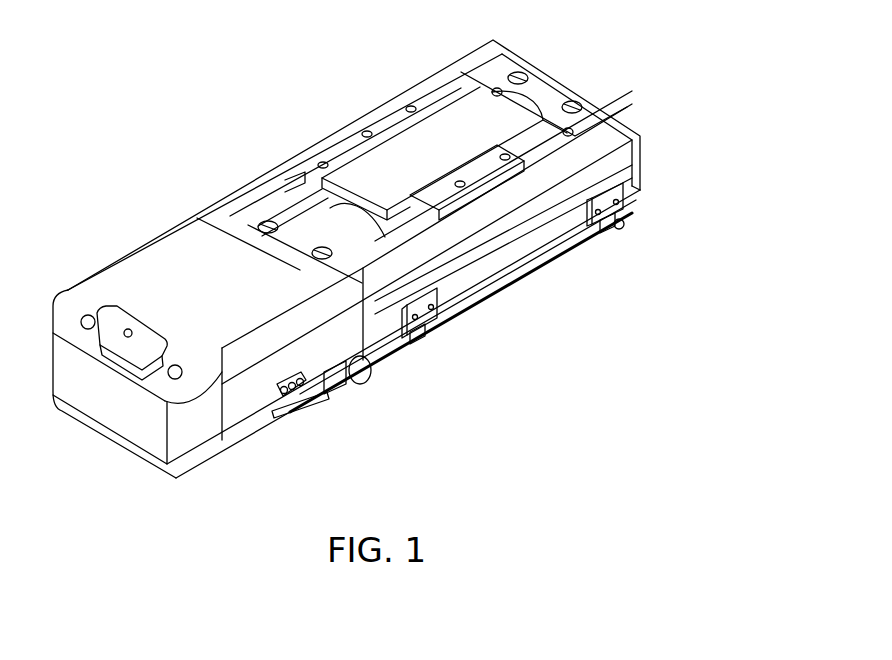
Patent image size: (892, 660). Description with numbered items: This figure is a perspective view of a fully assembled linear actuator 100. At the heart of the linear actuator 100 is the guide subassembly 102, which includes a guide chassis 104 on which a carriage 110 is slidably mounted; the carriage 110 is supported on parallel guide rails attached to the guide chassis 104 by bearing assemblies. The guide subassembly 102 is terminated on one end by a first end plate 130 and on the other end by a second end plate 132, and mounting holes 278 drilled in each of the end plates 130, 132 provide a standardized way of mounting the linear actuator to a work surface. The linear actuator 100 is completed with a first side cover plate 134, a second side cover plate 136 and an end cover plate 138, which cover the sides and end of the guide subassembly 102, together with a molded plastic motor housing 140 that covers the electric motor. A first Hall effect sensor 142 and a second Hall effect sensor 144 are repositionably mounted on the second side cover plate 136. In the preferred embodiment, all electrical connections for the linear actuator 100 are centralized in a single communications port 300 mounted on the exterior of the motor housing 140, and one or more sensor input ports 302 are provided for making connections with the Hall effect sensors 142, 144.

The linear actuator 100 is at (666, 121).
The guide subassembly 102 is at (446, 44).
The guide chassis 104 is at (513, 117).
The carriage 110 is at (395, 122).
The first end plate 130 is at (243, 210).
The second end plate 132 is at (542, 82).
The first side cover plate 134 is at (343, 123).
The second side cover plate 136 is at (523, 227).
The end cover plate 138 is at (647, 166).
The motor housing 140 is at (93, 405).
The first Hall effect sensor 142 is at (423, 322).
The second Hall effect sensor 144 is at (607, 220).
The mounting holes 278 is at (322, 247).
The communications port 300 is at (128, 329).
The sensor input ports 302 is at (293, 400).